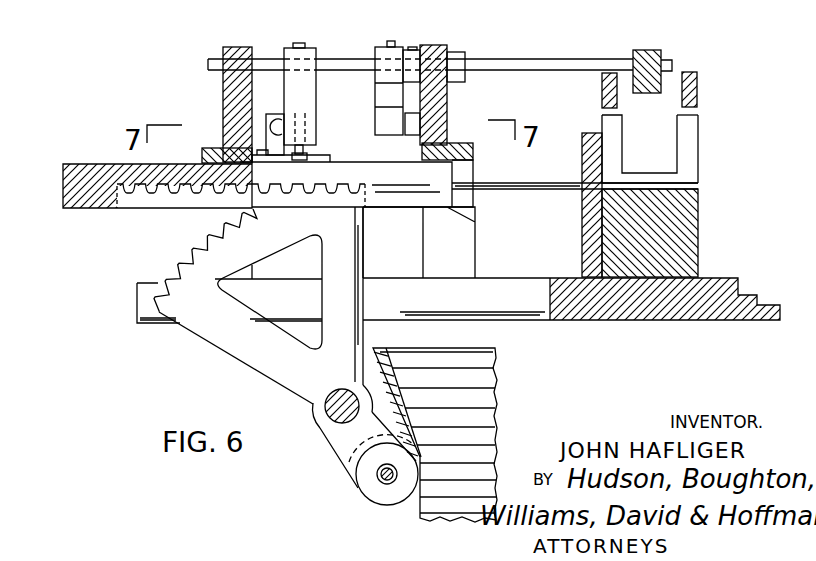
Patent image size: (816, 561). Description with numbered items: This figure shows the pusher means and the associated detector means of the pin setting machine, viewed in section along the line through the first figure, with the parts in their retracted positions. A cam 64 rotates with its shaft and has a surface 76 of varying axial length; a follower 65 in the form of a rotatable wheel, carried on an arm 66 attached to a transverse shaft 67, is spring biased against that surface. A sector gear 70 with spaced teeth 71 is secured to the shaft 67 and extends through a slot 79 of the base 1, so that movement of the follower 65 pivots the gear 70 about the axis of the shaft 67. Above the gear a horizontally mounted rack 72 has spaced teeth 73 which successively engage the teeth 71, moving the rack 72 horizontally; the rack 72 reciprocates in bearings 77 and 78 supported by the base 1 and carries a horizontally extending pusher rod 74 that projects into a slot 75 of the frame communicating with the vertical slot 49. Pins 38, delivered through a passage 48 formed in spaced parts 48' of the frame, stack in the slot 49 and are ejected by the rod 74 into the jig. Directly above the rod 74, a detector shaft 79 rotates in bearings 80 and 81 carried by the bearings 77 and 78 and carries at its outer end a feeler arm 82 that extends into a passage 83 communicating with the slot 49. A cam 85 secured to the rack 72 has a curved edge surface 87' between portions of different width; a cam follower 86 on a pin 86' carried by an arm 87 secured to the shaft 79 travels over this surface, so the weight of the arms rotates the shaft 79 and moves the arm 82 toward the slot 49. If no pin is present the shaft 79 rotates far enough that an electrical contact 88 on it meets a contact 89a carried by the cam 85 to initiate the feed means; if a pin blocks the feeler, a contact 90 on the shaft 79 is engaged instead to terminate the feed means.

The base 1 is at (632, 320).
The pins 38 is at (690, 178).
The passage 48 is at (711, 103).
The spaced parts of the frame 48' is at (651, 88).
The vertical slot 49 is at (700, 162).
The cam 64 is at (480, 348).
The follower 65 is at (377, 503).
The arm 66 is at (352, 447).
The shaft 67 is at (352, 370).
The sector gear 70 is at (212, 334).
The teeth 71 is at (176, 262).
The rack 72 is at (94, 205).
The teeth 73 is at (188, 200).
The pusher rod 74 is at (503, 188).
The slot 75 is at (603, 186).
The surface 76 is at (388, 376).
The bearing 77 is at (202, 152).
The bearing 78 is at (475, 152).
The detector shaft 79 is at (483, 63).
The bearing 80 is at (223, 91).
The bearing 81 is at (447, 105).
The feeler arm 82 is at (645, 52).
The passage 83 is at (677, 136).
The cam 85 is at (310, 158).
The cam follower 86 is at (325, 139).
The pin 86' is at (326, 123).
The arm 87 is at (317, 94).
The edge surface 87' is at (222, 133).
The electrical contact 88 is at (390, 130).
The contact 89a is at (276, 120).
The contact 90 is at (417, 132).